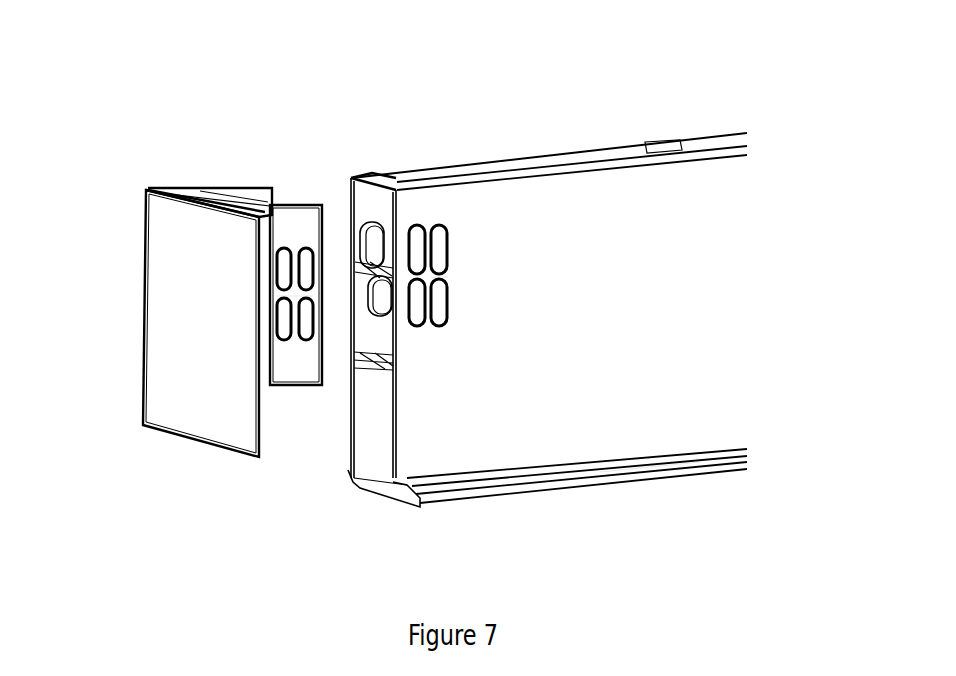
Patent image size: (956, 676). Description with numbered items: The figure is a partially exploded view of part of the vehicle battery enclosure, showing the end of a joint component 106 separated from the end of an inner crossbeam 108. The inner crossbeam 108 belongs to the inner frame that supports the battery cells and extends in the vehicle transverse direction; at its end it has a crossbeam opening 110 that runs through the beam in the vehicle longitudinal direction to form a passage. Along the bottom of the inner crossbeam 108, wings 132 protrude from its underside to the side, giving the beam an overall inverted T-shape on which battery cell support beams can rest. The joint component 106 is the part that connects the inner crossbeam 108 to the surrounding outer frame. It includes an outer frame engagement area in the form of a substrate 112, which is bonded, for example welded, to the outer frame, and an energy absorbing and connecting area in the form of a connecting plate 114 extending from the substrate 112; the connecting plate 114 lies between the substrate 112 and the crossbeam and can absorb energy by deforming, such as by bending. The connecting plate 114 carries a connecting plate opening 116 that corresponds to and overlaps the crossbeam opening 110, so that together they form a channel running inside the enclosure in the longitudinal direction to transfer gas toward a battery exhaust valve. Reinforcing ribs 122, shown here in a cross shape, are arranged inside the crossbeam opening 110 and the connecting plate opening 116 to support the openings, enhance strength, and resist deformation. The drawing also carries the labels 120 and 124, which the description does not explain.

The joint component 106 is at (293, 124).
The inner crossbeam 108 is at (628, 505).
The crossbeam opening 110 is at (437, 230).
The outer frame engagement area (substrate) 112 is at (157, 242).
The energy absorbing and connecting area (connecting plate) 114 is at (288, 373).
The connecting plate opening 116 is at (302, 258).
The hinge 120 is at (255, 201).
The reinforcing rib 122 is at (443, 277).
The aperture 124 is at (298, 292).
The wing 132 is at (660, 475).